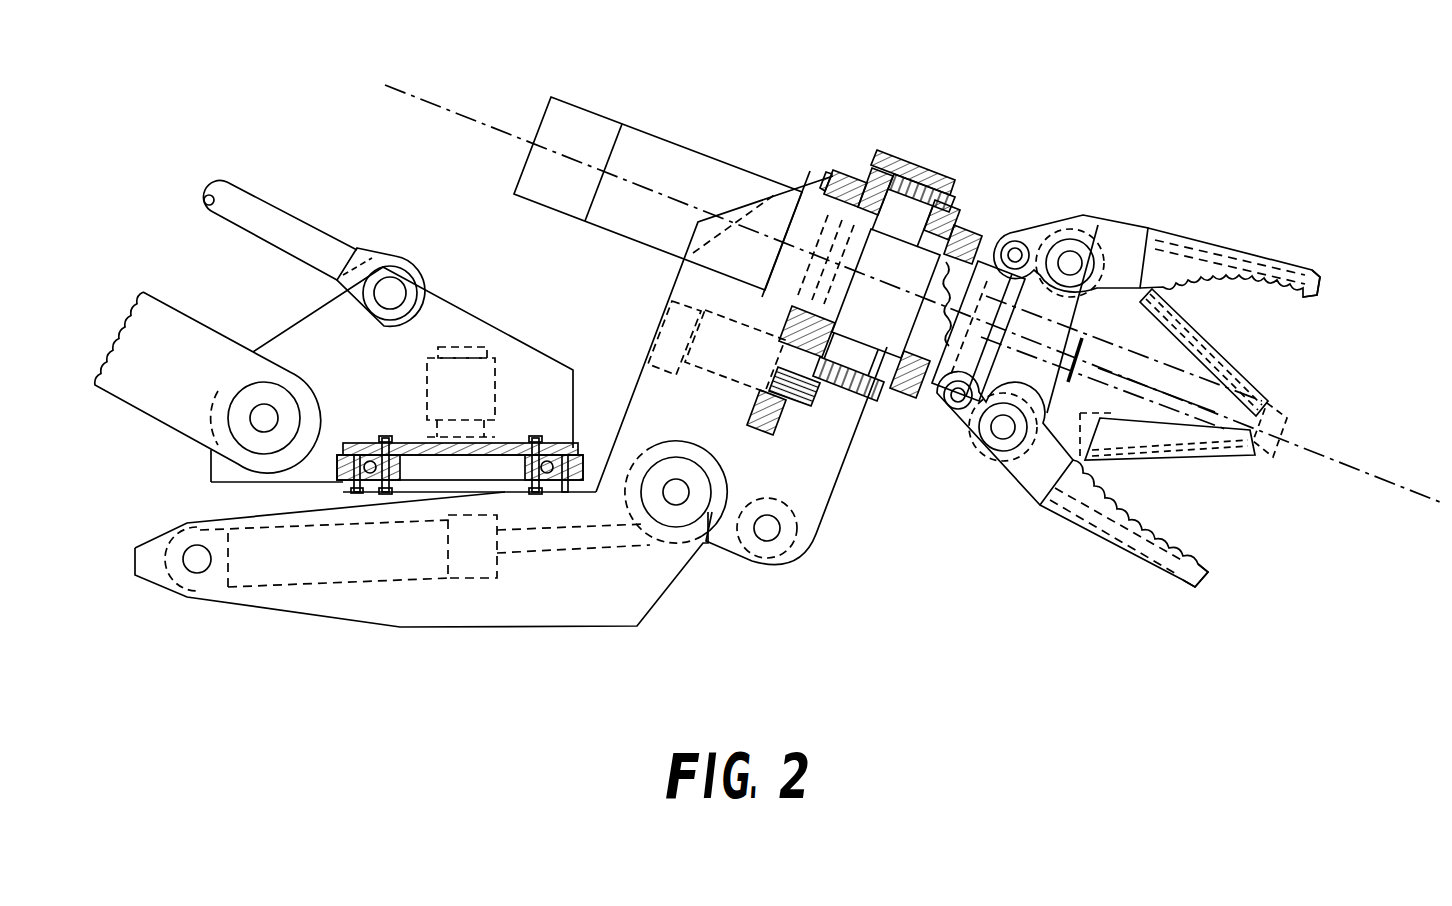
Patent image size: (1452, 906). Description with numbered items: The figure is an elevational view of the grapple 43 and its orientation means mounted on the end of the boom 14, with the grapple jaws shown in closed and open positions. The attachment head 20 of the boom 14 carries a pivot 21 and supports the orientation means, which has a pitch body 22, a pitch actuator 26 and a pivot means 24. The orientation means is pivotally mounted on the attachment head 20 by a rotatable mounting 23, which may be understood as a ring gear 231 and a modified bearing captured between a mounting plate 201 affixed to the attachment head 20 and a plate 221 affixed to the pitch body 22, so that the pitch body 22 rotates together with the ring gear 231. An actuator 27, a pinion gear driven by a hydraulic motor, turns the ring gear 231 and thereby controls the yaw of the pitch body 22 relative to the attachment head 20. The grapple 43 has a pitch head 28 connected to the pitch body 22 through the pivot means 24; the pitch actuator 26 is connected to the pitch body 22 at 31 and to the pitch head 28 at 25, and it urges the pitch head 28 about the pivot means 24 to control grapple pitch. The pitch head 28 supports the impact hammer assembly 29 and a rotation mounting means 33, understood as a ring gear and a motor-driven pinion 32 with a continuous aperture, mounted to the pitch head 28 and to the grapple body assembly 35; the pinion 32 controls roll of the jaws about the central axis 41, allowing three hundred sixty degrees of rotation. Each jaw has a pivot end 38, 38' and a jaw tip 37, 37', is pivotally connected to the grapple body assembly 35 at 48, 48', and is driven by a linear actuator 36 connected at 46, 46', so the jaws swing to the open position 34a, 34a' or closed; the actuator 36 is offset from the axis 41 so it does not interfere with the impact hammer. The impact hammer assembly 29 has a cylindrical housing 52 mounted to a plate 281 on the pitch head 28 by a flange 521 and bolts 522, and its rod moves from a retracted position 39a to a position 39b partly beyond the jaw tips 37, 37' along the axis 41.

The boom arm 14 is at (128, 398).
The attachment head 20 is at (447, 282).
The pivot bearing 21 is at (297, 393).
The pitch body 22 is at (563, 628).
The rotatable mounting 23 is at (595, 465).
The pivot means 24 is at (677, 487).
The connection of pitch actuator to pitch head 25 is at (773, 533).
The pitch actuator 26 is at (312, 572).
The actuator 27 is at (498, 355).
The pitch head 28 is at (812, 512).
The impact hammer assembly 29 is at (674, 148).
The connection of pitch actuator to pitch body 31 is at (197, 568).
The pinion 32 is at (795, 405).
The rotation mounting means 33 is at (928, 150).
The grapple body assembly 35 is at (890, 405).
The linear actuator 36 is at (975, 318).
The jaw tip 37 is at (1341, 301).
The jaw tip 37' is at (1227, 590).
The pivot end 38 is at (963, 215).
The pivot end 38' is at (920, 398).
The retracted position of impact rod 39a is at (1083, 343).
The extended position of impact rod 39b is at (1287, 428).
The central axis 41 is at (425, 102).
The grapple 43 is at (1188, 202).
The actuator connection to weldment 46 is at (1027, 218).
The actuator connection to weldment 46' is at (938, 433).
The pivotal connection 48 is at (1071, 232).
The pivotal connection 48' is at (1005, 449).
The cylindrical housing 52 is at (600, 213).
The mounting plate 201 is at (508, 447).
The plate 221 is at (403, 487).
The ring gear 231 is at (333, 455).
The plate 281 is at (870, 152).
The open position of jaw 34a is at (1250, 247).
The open position of second jaw 34a' is at (1130, 555).
The flange 521 is at (808, 180).
The bolts 522 is at (852, 183).